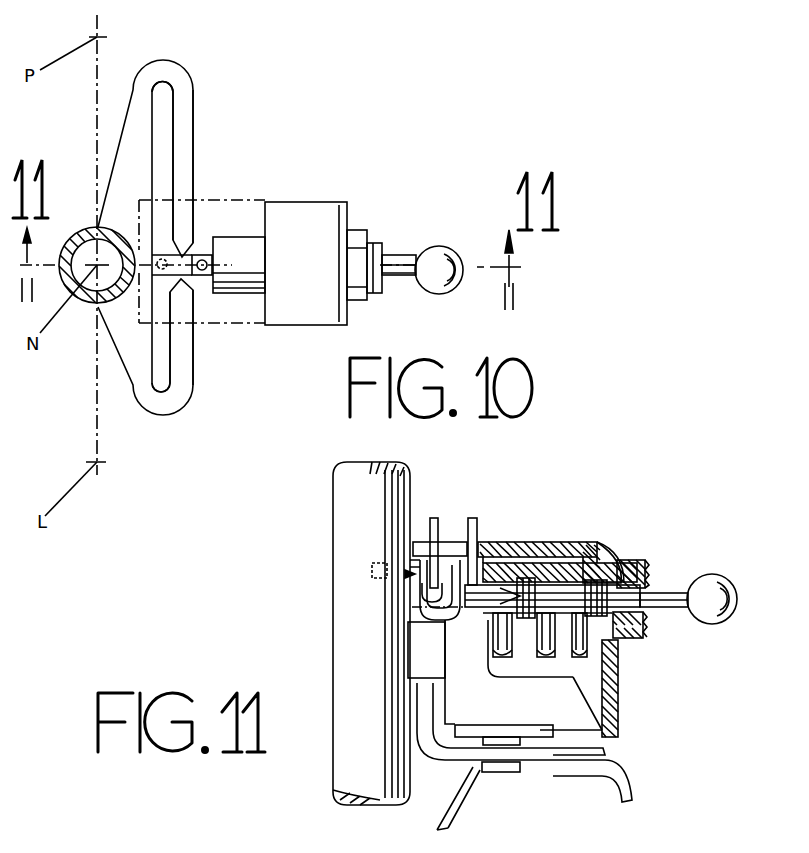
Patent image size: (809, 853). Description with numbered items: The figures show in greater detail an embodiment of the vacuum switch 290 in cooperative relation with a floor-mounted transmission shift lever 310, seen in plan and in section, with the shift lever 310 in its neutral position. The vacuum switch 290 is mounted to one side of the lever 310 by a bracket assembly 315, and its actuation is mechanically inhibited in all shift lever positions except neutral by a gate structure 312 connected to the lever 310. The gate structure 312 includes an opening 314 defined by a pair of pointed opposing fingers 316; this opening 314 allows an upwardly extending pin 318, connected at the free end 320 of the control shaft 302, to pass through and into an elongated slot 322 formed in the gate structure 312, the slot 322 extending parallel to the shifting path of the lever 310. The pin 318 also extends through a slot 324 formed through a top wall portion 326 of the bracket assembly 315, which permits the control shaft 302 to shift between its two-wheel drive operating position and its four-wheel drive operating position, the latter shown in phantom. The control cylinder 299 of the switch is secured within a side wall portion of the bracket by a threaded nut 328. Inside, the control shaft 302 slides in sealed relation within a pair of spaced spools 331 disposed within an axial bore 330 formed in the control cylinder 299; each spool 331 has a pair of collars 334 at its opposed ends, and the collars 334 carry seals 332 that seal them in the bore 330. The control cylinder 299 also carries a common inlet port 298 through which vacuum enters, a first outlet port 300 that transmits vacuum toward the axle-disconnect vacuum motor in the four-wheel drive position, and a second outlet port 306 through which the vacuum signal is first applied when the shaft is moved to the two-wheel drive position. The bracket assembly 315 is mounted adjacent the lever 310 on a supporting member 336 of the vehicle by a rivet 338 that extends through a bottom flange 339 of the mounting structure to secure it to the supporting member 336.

In FIG. 10, the vacuum switch 290 is at (233, 238).
In FIG. 11, the vacuum switch 290 is at (547, 555).
In FIG. 11, the common inlet port 298 is at (537, 654).
In FIG. 11, the control cylinder 299 is at (603, 555).
In FIG. 11, the first outlet port 300 is at (503, 657).
In FIG. 10, the control shaft 302 is at (393, 266).
In FIG. 11, the control shaft 302 is at (720, 623).
In FIG. 11, the second outlet port 306 is at (583, 653).
In FIG. 10, the transmission shift lever 310 is at (82, 297).
In FIG. 11, the transmission shift lever 310 is at (340, 595).
In FIG. 10, the gate structure 312 is at (223, 30).
In FIG. 11, the gate structure 312 is at (421, 621).
In FIG. 10, the opening 314 is at (183, 256).
In FIG. 11, the bracket assembly 315 is at (624, 713).
In FIG. 10, the pointed opposing fingers 316 is at (180, 178).
In FIG. 11, the pointed opposing fingers 316 is at (448, 583).
In FIG. 10, the pin 318 is at (204, 280).
In FIG. 11, the pin 318 is at (475, 517).
In FIG. 11, the free end 320 is at (487, 592).
In FIG. 10, the elongated slot 322 is at (162, 385).
In FIG. 11, the slot 324 is at (447, 547).
In FIG. 10, the top wall portion 326 is at (297, 222).
In FIG. 11, the top wall portion 326 is at (598, 547).
In FIG. 10, the threaded nut 328 is at (356, 240).
In FIG. 11, the threaded nut 328 is at (636, 560).
In FIG. 11, the axial bore 330 is at (500, 610).
In FIG. 11, the spools 331 is at (594, 578).
In FIG. 11, the seals 332 is at (608, 628).
In FIG. 11, the collars 334 is at (627, 597).
In FIG. 11, the supporting member 336 is at (563, 765).
In FIG. 11, the rivet 338 is at (488, 773).
In FIG. 11, the bottom flange 339 is at (583, 752).